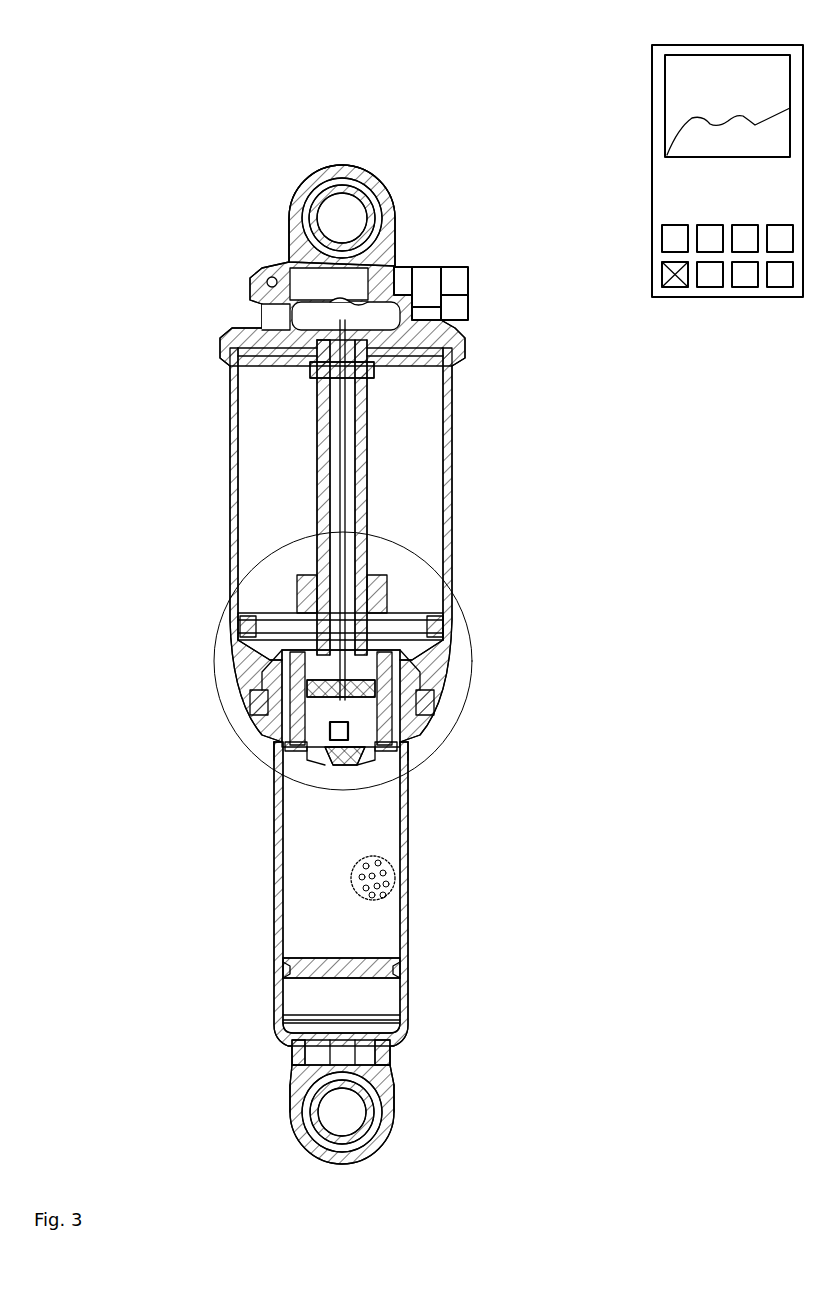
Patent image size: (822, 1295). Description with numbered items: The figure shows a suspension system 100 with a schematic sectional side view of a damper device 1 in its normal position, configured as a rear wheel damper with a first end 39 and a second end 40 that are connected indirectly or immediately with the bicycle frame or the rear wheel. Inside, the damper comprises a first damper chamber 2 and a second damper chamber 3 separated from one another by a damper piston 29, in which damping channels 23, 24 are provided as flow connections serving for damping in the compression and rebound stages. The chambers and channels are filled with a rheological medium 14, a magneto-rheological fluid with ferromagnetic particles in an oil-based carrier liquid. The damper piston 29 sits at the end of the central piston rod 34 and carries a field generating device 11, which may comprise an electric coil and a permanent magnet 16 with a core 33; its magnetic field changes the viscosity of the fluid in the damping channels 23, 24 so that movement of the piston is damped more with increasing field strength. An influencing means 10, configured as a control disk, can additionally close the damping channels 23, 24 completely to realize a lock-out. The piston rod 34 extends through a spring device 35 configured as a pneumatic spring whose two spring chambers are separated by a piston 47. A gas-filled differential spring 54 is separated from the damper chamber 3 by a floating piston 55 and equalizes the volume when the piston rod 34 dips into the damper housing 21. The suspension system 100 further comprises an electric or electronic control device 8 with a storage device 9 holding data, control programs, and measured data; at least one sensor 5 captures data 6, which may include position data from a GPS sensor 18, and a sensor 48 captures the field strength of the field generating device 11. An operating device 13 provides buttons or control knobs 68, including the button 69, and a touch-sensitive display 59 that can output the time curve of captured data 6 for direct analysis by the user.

The suspension system 100 is at (122, 172).
The damper device 1 is at (152, 276).
The first damper chamber 2 is at (247, 622).
The second damper chamber 3 is at (296, 902).
The sensor 5 is at (458, 293).
The data 6 is at (740, 112).
The control device 8 is at (424, 290).
The storage device 9 is at (442, 300).
The influencing means 10 is at (282, 752).
The field generating device 11 is at (345, 778).
The operating device 13 is at (643, 90).
The rheological medium 14 is at (400, 873).
The permanent magnet 16 is at (306, 778).
The GPS sensor 18 is at (402, 286).
The damper housing 21 is at (420, 924).
The damping channel 23 is at (300, 764).
The damping channel 24 is at (404, 772).
The damper piston 29 is at (378, 760).
The core 33 is at (257, 716).
The piston rod 34 is at (365, 442).
The spring device 35 is at (206, 466).
The first end 39 is at (390, 134).
The second end 40 is at (396, 1157).
The piston 47 is at (415, 652).
The sensor 48 is at (396, 735).
The differential spring 54 is at (300, 1000).
The floating piston 55 is at (283, 963).
The display 59 is at (705, 72).
The buttons 68 is at (780, 288).
The selection button 69 is at (666, 288).